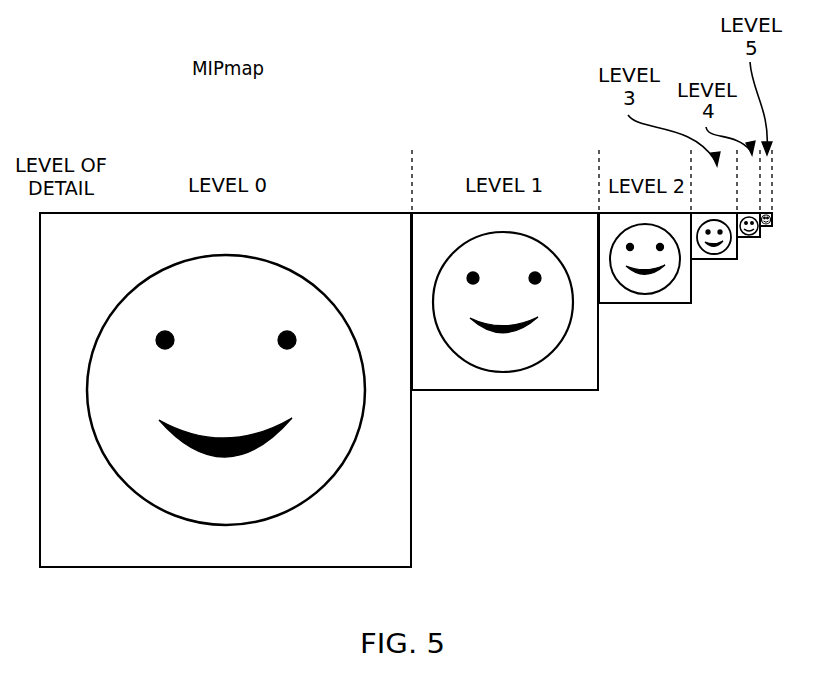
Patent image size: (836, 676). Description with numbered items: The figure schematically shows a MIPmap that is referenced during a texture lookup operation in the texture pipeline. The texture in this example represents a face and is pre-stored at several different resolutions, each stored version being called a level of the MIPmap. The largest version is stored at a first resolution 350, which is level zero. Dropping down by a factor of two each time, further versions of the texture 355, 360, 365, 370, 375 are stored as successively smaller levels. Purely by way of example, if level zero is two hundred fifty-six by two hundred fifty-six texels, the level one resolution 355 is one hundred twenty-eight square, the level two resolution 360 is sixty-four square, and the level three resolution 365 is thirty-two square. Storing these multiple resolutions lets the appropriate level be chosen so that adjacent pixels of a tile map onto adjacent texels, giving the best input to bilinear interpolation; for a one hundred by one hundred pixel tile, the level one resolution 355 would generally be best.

The first resolution 350 is at (225, 568).
The level one resolution 355 is at (512, 391).
The level two resolution 360 is at (645, 305).
The level three resolution 365 is at (703, 261).
The level four version of the texture 370 is at (752, 240).
The level five version of the texture 375 is at (772, 228).